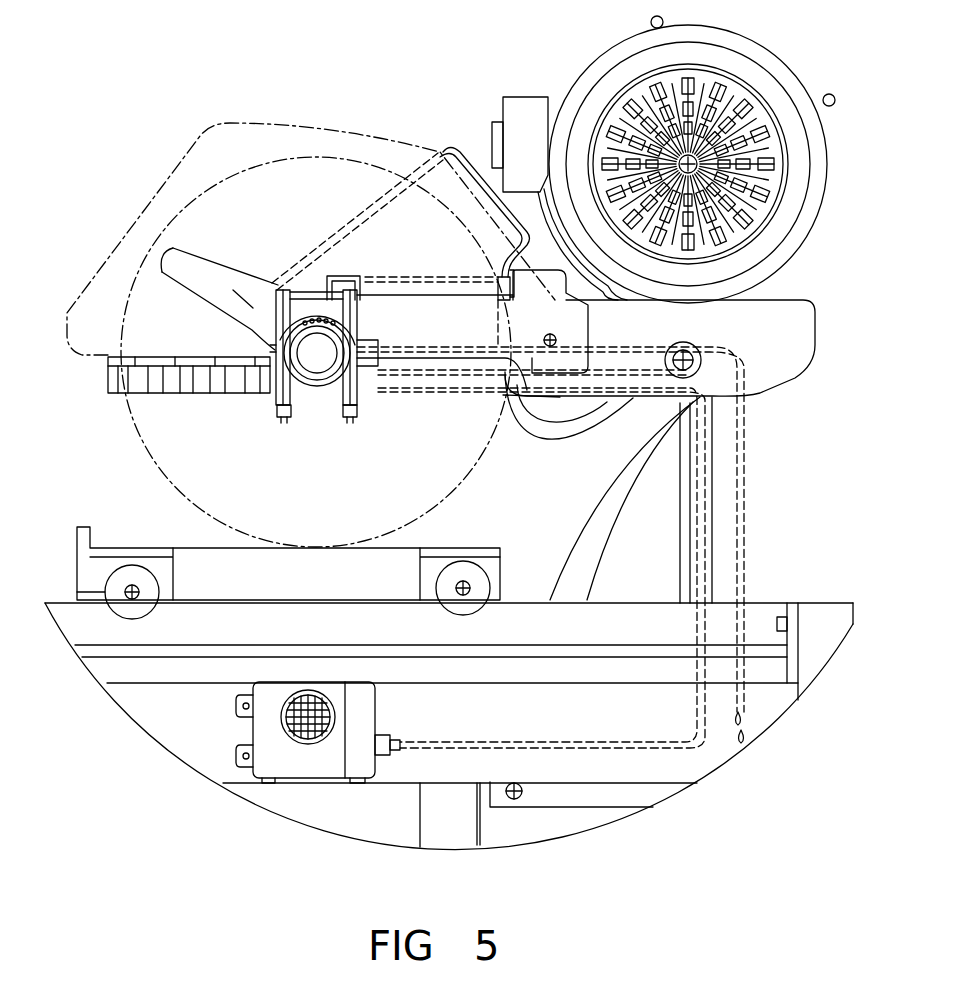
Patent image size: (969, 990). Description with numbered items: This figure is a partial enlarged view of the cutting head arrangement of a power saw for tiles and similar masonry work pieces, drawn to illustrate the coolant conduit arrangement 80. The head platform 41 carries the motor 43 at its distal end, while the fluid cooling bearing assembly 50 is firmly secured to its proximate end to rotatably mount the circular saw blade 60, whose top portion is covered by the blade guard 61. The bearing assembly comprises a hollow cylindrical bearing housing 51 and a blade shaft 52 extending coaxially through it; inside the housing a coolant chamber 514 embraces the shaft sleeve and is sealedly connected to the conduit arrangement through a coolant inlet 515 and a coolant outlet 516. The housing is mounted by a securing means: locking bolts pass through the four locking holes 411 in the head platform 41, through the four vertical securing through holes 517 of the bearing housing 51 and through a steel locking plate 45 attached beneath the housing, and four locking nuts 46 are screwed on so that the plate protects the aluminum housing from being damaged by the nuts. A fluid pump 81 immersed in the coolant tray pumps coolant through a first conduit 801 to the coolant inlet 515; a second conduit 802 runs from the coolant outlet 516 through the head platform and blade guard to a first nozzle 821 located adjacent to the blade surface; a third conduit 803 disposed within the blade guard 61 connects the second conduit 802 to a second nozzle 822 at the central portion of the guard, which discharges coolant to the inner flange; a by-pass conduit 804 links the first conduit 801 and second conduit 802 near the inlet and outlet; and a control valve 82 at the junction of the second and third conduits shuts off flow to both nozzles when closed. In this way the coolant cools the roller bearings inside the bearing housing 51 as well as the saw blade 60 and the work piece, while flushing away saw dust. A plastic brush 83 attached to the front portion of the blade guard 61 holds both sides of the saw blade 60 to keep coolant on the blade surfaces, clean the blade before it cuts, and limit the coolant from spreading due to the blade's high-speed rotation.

The head platform 41 is at (583, 338).
The motor 43 is at (790, 217).
The locking plate 45 is at (266, 400).
The locking nuts 46 is at (372, 393).
The fluid cooling bearing assembly 50 is at (266, 395).
The bearing housing 51 is at (190, 350).
The blade shaft 52 is at (268, 366).
The saw blade 60 is at (190, 477).
The blade guard 61 is at (260, 150).
The coolant conduit arrangement 80 is at (443, 150).
The fluid pump 81 is at (358, 718).
The control valve 82 is at (530, 262).
The plastic brush 83 is at (106, 375).
The locking holes 411 is at (308, 298).
The coolant chamber 514 is at (312, 414).
The coolant inlet 515 is at (363, 407).
The coolant outlet 516 is at (360, 292).
The securing through holes 517 is at (742, 570).
The first conduit 801 is at (560, 448).
The second conduit 802 is at (458, 140).
The third conduit 803 is at (380, 267).
The by-pass conduit 804 is at (377, 366).
The first nozzle 821 is at (265, 350).
The second nozzle 822 is at (275, 282).